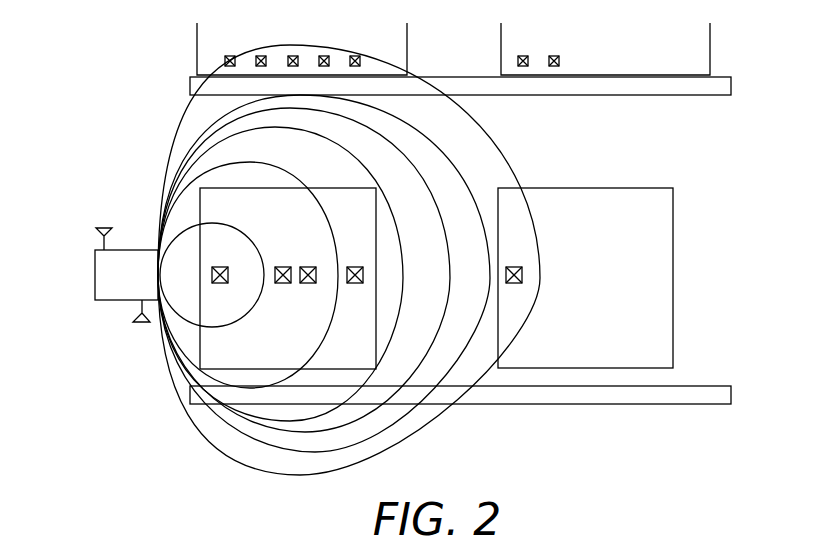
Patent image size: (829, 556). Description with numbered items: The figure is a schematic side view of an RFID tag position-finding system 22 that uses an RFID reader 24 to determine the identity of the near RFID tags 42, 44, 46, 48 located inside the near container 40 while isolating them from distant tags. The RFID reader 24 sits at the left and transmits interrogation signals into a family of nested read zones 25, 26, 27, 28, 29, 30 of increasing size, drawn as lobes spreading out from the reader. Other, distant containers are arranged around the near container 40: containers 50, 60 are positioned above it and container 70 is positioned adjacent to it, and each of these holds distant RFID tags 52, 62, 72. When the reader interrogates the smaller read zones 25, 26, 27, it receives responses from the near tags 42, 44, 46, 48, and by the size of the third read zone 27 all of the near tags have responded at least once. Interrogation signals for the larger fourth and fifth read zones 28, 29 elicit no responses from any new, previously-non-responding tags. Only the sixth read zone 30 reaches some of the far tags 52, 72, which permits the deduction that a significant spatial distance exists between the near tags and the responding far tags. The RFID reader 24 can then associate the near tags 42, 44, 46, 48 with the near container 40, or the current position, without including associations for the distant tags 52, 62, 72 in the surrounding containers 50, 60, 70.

The RFID system 22 is at (104, 80).
The RFID reader 24 is at (95, 275).
The first read zone 25 is at (177, 230).
The second read zone 26 is at (185, 187).
The third read zone 27 is at (188, 165).
The fourth read zone 28 is at (207, 147).
The fifth read zone 29 is at (210, 127).
The sixth read zone 30 is at (187, 92).
The near container 40 is at (215, 347).
The near RFID tag 42 is at (216, 266).
The near RFID tag 44 is at (284, 284).
The near RFID tag 46 is at (355, 284).
The near RFID tag 48 is at (308, 266).
The distant container 50 is at (407, 58).
The distant RFID tags 52 is at (230, 56).
The distant container 60 is at (500, 32).
The distant RFID tags 62 is at (524, 56).
The distant container 70 is at (586, 188).
The distant RFID tag 72 is at (513, 266).